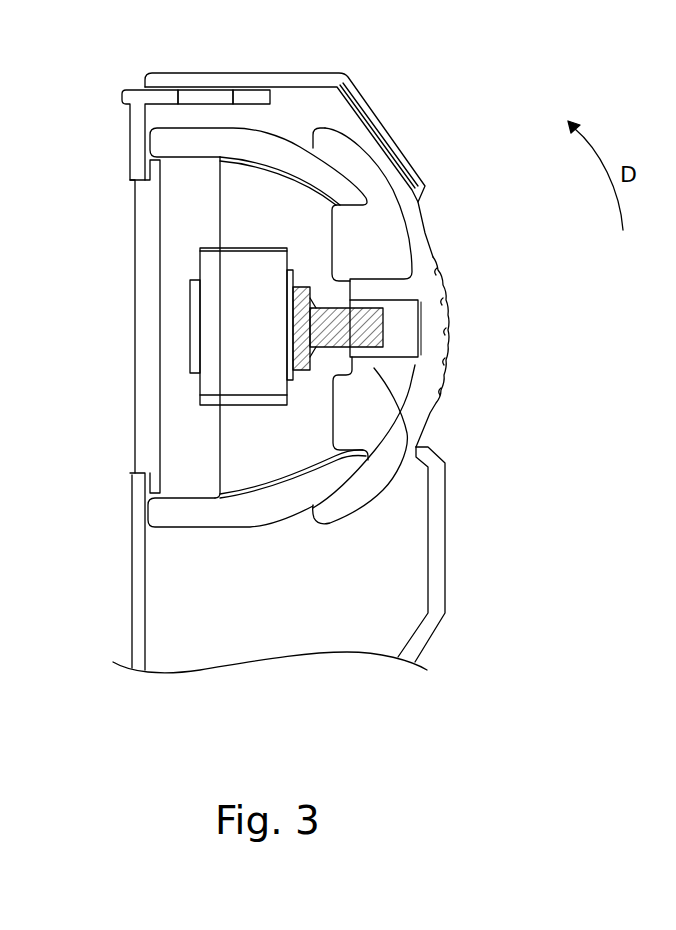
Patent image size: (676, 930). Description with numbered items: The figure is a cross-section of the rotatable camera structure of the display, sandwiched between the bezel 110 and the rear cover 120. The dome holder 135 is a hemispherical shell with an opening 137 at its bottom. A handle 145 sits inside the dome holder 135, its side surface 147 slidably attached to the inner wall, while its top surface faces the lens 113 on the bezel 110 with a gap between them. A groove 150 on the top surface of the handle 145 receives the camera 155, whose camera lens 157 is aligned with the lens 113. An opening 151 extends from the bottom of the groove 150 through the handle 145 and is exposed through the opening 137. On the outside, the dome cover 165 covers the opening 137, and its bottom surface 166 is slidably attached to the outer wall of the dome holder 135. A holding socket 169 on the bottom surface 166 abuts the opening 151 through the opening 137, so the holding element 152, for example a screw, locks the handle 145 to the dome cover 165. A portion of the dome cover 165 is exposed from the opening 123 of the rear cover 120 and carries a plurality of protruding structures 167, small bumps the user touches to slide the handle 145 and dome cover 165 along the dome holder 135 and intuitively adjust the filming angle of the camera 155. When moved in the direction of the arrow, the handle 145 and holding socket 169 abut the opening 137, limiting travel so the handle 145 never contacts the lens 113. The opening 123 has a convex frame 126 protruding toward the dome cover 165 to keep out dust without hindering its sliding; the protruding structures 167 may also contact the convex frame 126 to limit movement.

The bezel 110 is at (138, 97).
The lens 113 is at (148, 275).
The rear cover 120 is at (312, 82).
The opening 123 is at (432, 221).
The convex frame 126 is at (438, 450).
The dome holder 135 is at (200, 140).
The opening 137 is at (352, 200).
The handle 145 is at (235, 424).
The side surface 147 is at (252, 504).
The groove 150 is at (226, 243).
The opening 151 is at (298, 262).
The holding element 152 is at (300, 356).
The camera 155 is at (208, 390).
The camera lens 157 is at (195, 308).
The dome cover 165 is at (368, 488).
The bottom surface 166 is at (320, 489).
The protruding structures 167 is at (446, 363).
The holding socket 169 is at (405, 390).